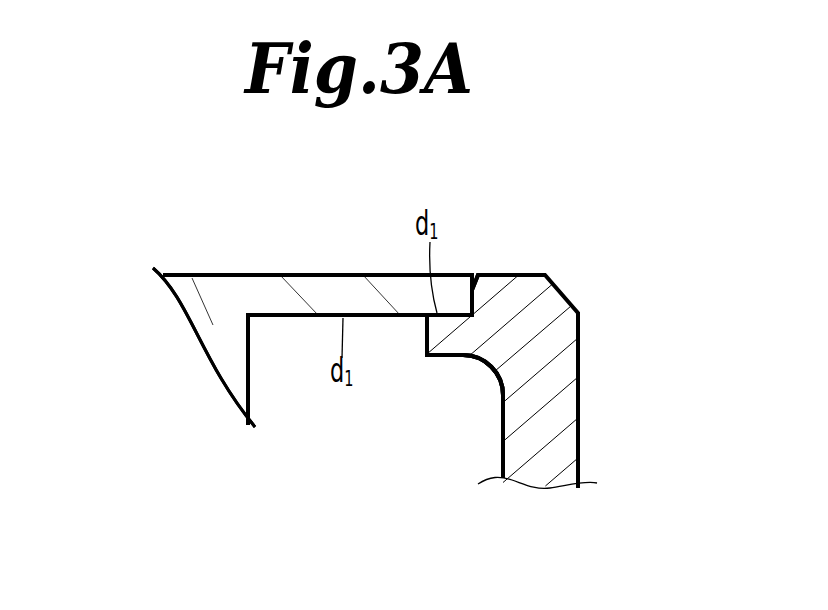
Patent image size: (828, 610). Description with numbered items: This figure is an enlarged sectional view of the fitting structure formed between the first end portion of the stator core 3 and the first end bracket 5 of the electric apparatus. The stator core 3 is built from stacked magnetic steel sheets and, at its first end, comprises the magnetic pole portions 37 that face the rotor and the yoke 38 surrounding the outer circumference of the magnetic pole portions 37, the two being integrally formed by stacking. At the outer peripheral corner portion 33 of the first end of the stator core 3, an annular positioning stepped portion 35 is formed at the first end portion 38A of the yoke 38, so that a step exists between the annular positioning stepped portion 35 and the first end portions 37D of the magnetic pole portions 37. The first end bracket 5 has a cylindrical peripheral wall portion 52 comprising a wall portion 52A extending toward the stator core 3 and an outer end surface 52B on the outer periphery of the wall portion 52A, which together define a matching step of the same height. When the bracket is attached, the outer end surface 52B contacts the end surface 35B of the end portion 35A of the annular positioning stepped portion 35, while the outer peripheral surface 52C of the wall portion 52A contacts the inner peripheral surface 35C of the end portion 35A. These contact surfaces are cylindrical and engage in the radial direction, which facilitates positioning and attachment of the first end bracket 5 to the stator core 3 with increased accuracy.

The stator core 3 is at (200, 293).
The first end bracket 5 is at (580, 350).
The outer peripheral corner portion 33 is at (250, 320).
The annular positioning stepped portion 35 is at (318, 273).
The end portion of the annular positioning stepped portion 35A is at (362, 273).
The end surface 35B is at (475, 297).
The inner peripheral surface 35C is at (426, 326).
The magnetic pole portion 37 is at (235, 375).
The first end portion of the magnetic pole portion 37D is at (252, 388).
The yoke 38 is at (173, 273).
The first end portion of the yoke 38A is at (225, 273).
The cylindrical peripheral wall portion 52 is at (463, 357).
The wall portion 52A is at (440, 357).
The outer end surface 52B is at (465, 273).
The outer peripheral surface 52C is at (458, 313).